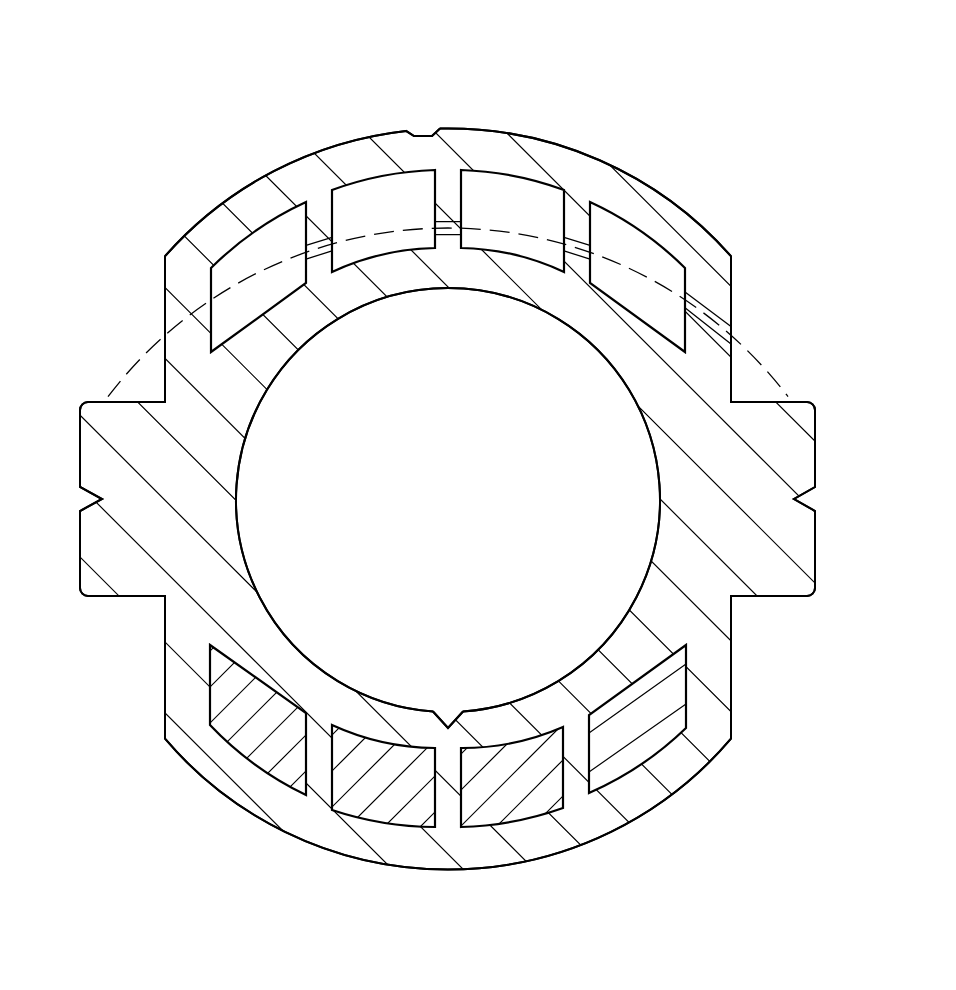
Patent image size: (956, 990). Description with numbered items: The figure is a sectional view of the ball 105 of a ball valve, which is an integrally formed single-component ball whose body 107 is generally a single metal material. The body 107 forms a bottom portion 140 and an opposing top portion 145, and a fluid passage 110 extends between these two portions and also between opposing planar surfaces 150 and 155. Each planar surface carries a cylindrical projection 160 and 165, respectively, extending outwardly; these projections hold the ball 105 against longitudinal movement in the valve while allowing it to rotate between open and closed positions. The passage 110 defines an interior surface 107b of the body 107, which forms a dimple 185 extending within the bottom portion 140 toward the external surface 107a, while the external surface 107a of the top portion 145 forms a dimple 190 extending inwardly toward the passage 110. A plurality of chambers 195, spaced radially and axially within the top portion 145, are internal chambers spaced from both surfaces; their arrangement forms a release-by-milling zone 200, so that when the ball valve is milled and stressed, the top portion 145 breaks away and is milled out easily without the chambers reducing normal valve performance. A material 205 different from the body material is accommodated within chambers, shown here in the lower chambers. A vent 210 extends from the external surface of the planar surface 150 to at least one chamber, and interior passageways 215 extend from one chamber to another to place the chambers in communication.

The ball 105 is at (246, 72).
The body 107 is at (806, 535).
The external surface 107a is at (706, 228).
The interior surface 107b is at (364, 303).
The fluid passage 110 is at (426, 514).
The bottom portion 140 is at (478, 495).
The top portion 145 is at (453, 203).
The planar surface 150 is at (733, 270).
The planar surface 155 is at (165, 312).
The cylindrical projection 160 is at (816, 473).
The cylindrical projection 165 is at (79, 458).
The dimple 185 is at (443, 708).
The dimple 190 is at (428, 133).
The plurality of chambers 195 is at (640, 243).
The release-by-milling zone 200 is at (138, 376).
The material 205 is at (648, 735).
The vent 210 is at (726, 322).
The interior passageway 215 is at (322, 244).